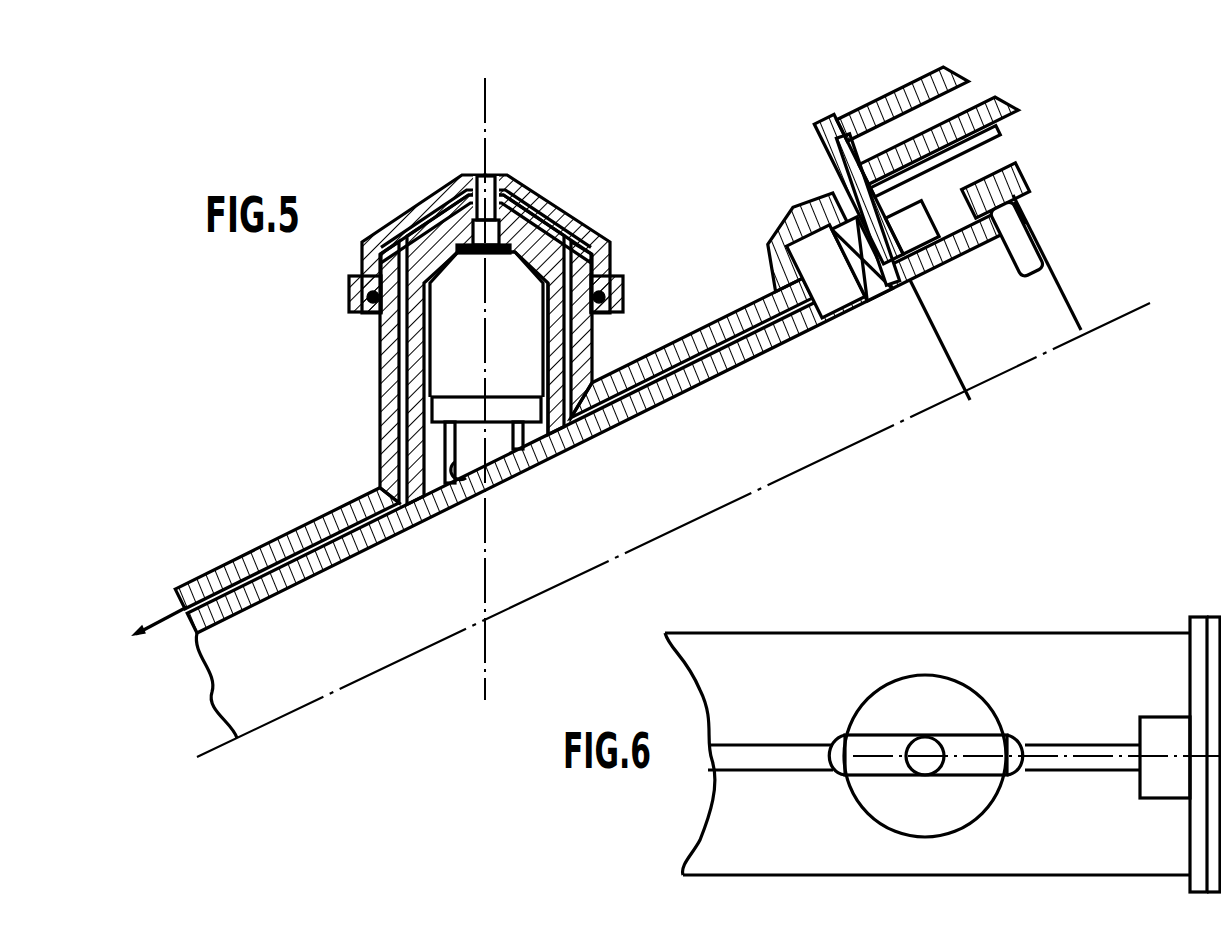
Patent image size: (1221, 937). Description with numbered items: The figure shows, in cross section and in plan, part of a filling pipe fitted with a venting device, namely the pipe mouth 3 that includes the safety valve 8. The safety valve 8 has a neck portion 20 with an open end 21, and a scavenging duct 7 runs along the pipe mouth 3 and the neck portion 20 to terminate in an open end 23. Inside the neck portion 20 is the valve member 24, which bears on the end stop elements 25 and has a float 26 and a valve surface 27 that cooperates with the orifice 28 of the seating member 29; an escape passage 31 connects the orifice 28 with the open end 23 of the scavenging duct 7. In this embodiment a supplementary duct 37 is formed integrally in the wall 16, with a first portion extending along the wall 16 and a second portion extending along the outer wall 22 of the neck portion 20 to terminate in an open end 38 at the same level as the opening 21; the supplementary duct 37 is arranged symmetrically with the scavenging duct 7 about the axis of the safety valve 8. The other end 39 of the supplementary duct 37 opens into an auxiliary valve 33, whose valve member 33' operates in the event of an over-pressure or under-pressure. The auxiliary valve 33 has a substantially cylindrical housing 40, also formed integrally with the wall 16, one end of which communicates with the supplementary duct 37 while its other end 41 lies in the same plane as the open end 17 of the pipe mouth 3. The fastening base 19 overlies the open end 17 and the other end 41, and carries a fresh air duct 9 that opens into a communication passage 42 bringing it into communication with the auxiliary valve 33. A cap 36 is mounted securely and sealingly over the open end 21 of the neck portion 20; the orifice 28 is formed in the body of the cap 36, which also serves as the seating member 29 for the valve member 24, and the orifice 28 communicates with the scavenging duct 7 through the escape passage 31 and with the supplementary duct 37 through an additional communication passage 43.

In FIG. 5, the pipe mouth 3 is at (688, 236).
In FIG. 5, the scavenging duct 7 is at (263, 540).
In FIG. 6, the scavenging duct 7 is at (783, 745).
In FIG. 5, the safety valve 8 is at (358, 386).
In FIG. 5, the fresh air duct 9 is at (1005, 100).
In FIG. 5, the wall 16 is at (748, 372).
In FIG. 5, the open end 17 is at (943, 349).
In FIG. 5, the fastening base 19 is at (1066, 281).
In FIG. 5, the neck portion 20 is at (600, 328).
In FIG. 5, the open end 21 is at (387, 310).
In FIG. 5, the outer wall 22 is at (413, 330).
In FIG. 5, the open end 23 is at (349, 292).
In FIG. 5, the valve member 24 is at (500, 338).
In FIG. 5, the end stop elements 25 is at (470, 472).
In FIG. 5, the float 26 is at (496, 410).
In FIG. 5, the valve surface 27 is at (553, 222).
In FIG. 5, the orifice 28 is at (500, 215).
In FIG. 5, the seating member 29 is at (448, 214).
In FIG. 5, the escape passage 31 is at (428, 214).
In FIG. 5, the auxiliary valve 33 is at (837, 180).
In FIG. 5, the valve member 33' is at (951, 195).
In FIG. 5, the cap 36 is at (497, 160).
In FIG. 6, the cap 36 is at (997, 682).
In FIG. 5, the supplementary duct 37 is at (722, 312).
In FIG. 6, the supplementary duct 37 is at (1075, 745).
In FIG. 5, the open end 38 is at (614, 265).
In FIG. 5, the other end 39 is at (797, 305).
In FIG. 5, the housing 40 is at (796, 210).
In FIG. 6, the housing 40 is at (1160, 800).
In FIG. 5, the other end 41 is at (940, 205).
In FIG. 5, the communication passage 42 is at (913, 172).
In FIG. 5, the additional communication passage 43 is at (517, 212).